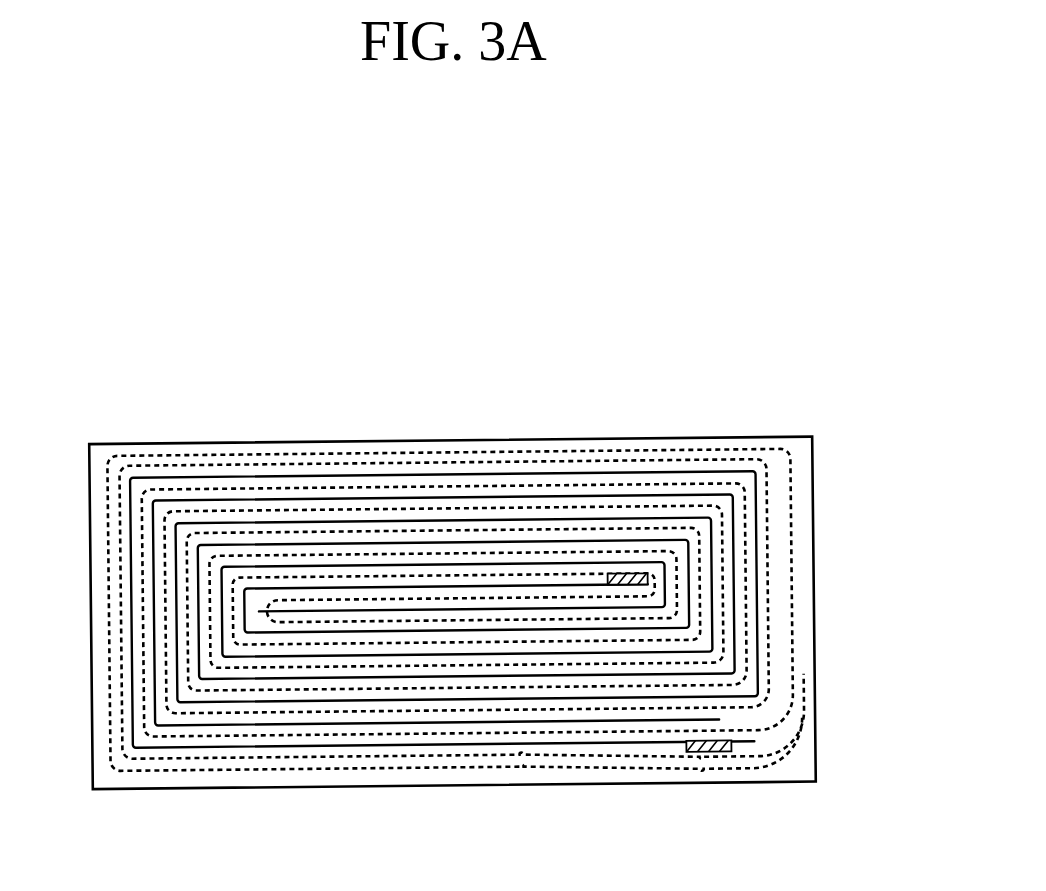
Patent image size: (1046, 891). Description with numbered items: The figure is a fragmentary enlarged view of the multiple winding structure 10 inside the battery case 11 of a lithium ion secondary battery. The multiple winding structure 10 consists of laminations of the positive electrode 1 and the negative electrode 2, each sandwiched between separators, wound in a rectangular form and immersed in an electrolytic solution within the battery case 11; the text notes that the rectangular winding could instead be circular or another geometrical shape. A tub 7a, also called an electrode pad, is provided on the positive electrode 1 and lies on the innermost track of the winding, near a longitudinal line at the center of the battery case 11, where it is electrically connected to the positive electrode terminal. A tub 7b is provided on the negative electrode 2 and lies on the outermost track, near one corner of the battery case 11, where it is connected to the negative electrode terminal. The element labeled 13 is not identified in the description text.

The positive electrode 1 is at (603, 496).
The negative electrode 2 is at (559, 468).
The tub 7a is at (645, 572).
The tub 7b is at (713, 756).
The multiple winding structure 10 is at (685, 382).
The battery case 11 is at (814, 481).
The insulating layer 13 is at (515, 505).